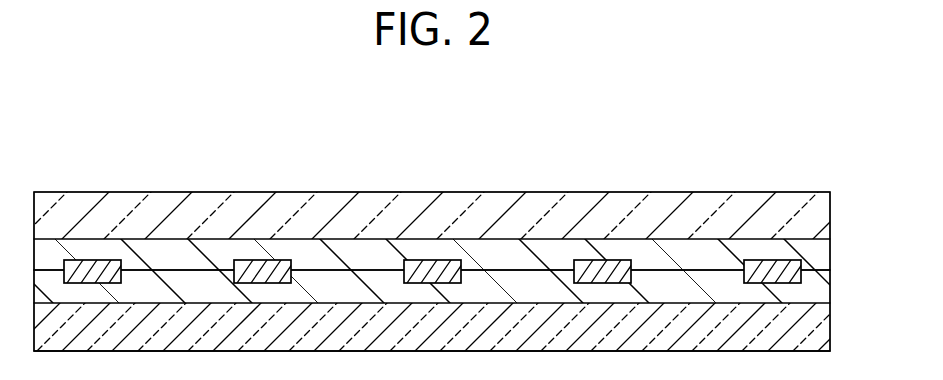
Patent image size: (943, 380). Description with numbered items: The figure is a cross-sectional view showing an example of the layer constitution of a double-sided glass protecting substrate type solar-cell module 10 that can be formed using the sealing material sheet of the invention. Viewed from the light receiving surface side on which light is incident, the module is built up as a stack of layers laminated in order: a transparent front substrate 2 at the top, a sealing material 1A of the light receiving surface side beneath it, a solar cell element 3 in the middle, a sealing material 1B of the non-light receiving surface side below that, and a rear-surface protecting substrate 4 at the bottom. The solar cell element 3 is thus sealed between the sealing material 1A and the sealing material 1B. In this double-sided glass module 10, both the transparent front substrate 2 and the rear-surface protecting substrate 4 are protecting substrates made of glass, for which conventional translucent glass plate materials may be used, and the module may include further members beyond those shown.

The double-sided glass protecting substrate type solar-cell module 10 is at (703, 131).
The transparent front substrate 2 is at (815, 210).
The sealing material of a light receiving surface side 1A is at (815, 252).
The sealing material of a non-light receiving surface side 1B is at (815, 288).
The solar cell element 3 is at (100, 268).
The rear-surface protecting substrate 4 is at (813, 327).